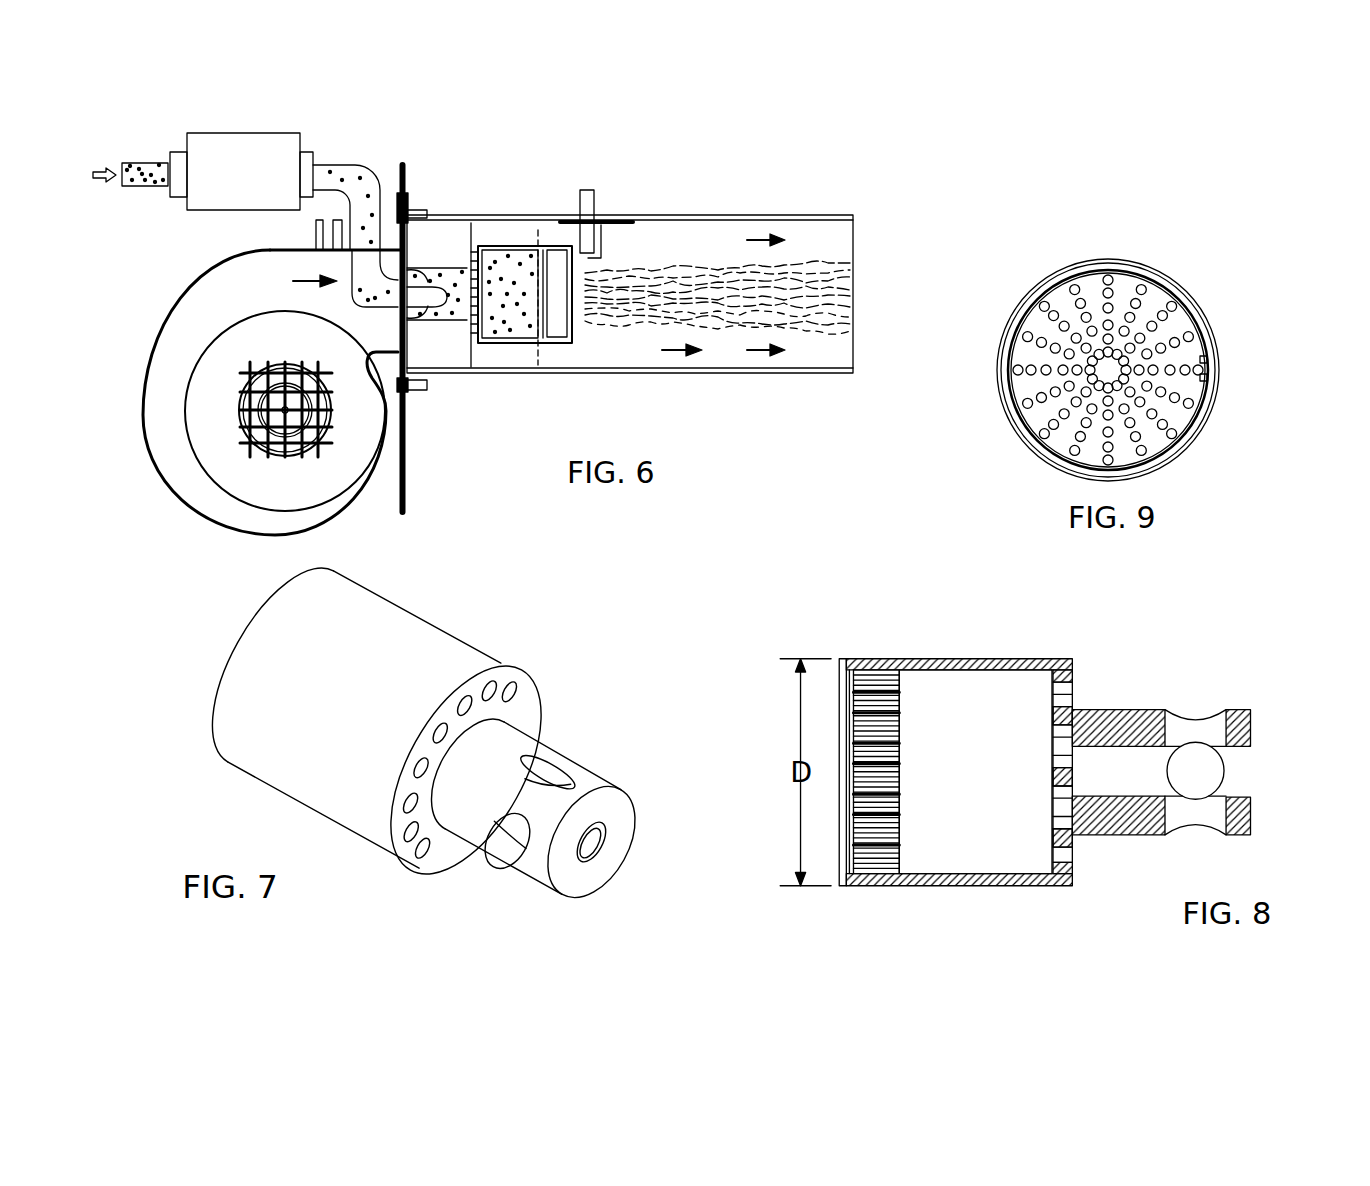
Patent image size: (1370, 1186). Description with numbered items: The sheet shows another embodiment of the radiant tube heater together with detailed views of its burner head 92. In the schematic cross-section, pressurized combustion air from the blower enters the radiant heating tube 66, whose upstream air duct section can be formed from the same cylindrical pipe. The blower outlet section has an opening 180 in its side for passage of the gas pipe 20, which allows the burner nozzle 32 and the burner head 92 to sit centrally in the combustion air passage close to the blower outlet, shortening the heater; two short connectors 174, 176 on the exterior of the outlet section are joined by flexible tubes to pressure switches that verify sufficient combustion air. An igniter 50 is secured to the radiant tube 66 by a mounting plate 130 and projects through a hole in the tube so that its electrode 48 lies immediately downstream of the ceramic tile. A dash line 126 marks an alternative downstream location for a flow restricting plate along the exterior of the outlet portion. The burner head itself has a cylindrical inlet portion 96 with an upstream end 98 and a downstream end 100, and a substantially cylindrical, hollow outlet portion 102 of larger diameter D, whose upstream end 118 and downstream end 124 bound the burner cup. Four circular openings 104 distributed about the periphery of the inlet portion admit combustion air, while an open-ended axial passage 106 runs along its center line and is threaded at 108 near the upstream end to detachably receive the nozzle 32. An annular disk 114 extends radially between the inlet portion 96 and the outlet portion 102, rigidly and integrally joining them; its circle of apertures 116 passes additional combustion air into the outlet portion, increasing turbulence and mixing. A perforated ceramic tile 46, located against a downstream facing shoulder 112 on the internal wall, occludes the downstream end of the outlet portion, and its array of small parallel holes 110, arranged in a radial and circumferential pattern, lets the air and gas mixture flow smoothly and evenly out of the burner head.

In FIG. 6, the gas pipe 20 is at (381, 193).
In FIG. 6, the short connector 176 is at (340, 233).
In FIG. 6, the short connector 174 is at (313, 235).
In FIG. 6, the opening 180 is at (352, 257).
In FIG. 6, the burner nozzle 32 is at (440, 297).
In FIG. 6, the burner head 92 is at (525, 245).
In FIG. 9, the burner head 92 is at (1027, 255).
In FIG. 7, the burner head 92 is at (433, 575).
In FIG. 8, the burner head 92 is at (992, 648).
In FIG. 6, the dash line 126 is at (541, 231).
In FIG. 6, the igniter 50 is at (592, 208).
In FIG. 6, the mounting plate 130 is at (625, 228).
In FIG. 6, the electrode 48 is at (590, 256).
In FIG. 6, the radiant heating tube 66 is at (786, 215).
In FIG. 6, the outlet portion 102 is at (520, 347).
In FIG. 9, the outlet portion 102 is at (1220, 375).
In FIG. 8, the outlet portion 102 is at (931, 657).
In FIG. 9, the perforated ceramic tile 46 is at (1150, 296).
In FIG. 8, the perforated ceramic tile 46 is at (897, 833).
In FIG. 9, the holes 110 is at (1185, 345).
In FIG. 7, the downstream end of the outlet portion 124 is at (245, 610).
In FIG. 7, the apertures 116 is at (467, 680).
In FIG. 7, the downstream end of the inlet portion 100 is at (562, 716).
In FIG. 8, the downstream end of the inlet portion 100 is at (1068, 707).
In FIG. 7, the inlet portion 96 is at (507, 708).
In FIG. 8, the inlet portion 96 is at (1107, 717).
In FIG. 7, the openings 104 is at (512, 750).
In FIG. 8, the openings 104 is at (1193, 753).
In FIG. 7, the upstream end of the inlet portion 98 is at (572, 788).
In FIG. 7, the threads 108 is at (560, 817).
In FIG. 8, the threads 108 is at (1235, 780).
In FIG. 7, the upstream end of the outlet portion 118 is at (360, 760).
In FIG. 7, the annular disk 114 is at (416, 830).
In FIG. 8, the downstream facing shoulder 112 is at (898, 658).
In FIG. 8, the axial passage 106 is at (1113, 773).